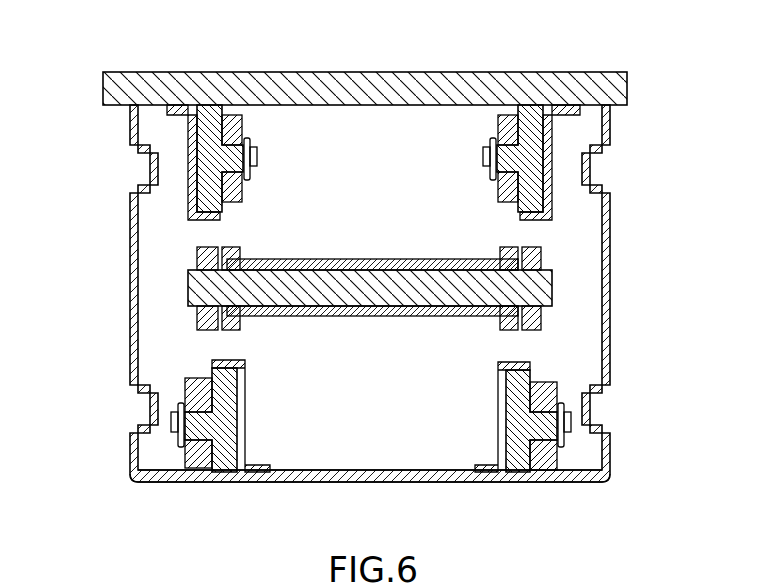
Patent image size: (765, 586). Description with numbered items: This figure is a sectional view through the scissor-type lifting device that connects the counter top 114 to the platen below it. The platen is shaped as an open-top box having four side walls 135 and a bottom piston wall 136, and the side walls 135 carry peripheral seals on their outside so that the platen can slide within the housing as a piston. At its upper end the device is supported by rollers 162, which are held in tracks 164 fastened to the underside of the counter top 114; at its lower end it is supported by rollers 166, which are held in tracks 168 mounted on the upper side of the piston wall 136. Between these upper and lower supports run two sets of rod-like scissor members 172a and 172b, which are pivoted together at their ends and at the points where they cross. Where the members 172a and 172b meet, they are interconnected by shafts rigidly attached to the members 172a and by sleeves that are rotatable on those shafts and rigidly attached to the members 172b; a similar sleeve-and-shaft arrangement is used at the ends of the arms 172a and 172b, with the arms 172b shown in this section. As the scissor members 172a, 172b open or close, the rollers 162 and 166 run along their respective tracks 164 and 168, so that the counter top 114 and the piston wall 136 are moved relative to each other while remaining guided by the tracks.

The counter top 114 is at (436, 72).
The side walls 135 is at (610, 262).
The bottom piston wall 136 is at (381, 482).
The rollers 162 is at (221, 212).
The tracks 164 is at (188, 210).
The rollers 166 is at (212, 368).
The tracks 168 is at (244, 420).
The scissor members 172a is at (246, 124).
The scissor members 172b is at (197, 318).